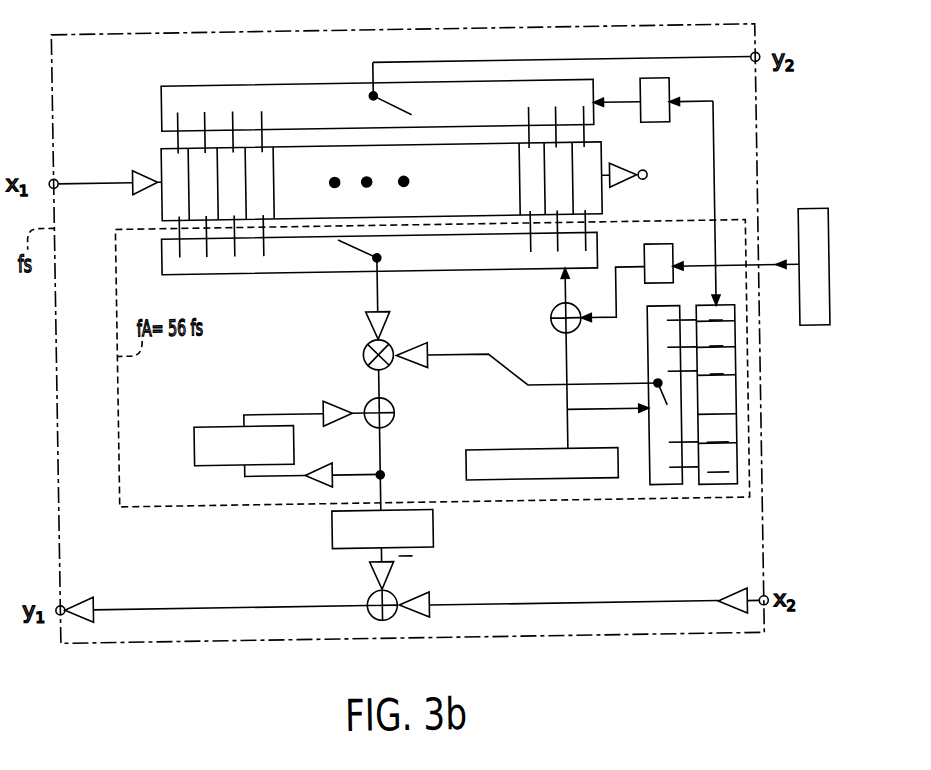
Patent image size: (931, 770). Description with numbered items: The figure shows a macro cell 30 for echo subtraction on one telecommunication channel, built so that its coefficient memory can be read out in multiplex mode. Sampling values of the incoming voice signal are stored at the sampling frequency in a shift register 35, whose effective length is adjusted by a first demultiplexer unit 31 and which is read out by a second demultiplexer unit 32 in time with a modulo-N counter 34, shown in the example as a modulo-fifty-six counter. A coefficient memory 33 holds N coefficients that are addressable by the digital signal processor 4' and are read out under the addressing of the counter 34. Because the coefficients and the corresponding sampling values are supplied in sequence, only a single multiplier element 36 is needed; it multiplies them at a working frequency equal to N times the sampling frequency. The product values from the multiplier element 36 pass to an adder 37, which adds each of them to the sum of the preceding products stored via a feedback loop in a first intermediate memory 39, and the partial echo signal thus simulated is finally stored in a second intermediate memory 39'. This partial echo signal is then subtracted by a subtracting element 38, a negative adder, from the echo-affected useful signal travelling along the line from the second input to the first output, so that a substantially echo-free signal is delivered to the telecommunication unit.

The macro cell 30 is at (56, 47).
The first demultiplexer unit 31 is at (165, 104).
The second demultiplexer unit 32 is at (163, 253).
The coefficient memory 33 is at (735, 401).
The modulo-N counter 34 is at (464, 465).
The shift register 35 is at (461, 190).
The multiplier element 36 is at (363, 356).
The adder 37 is at (364, 404).
The subtracting element 38 is at (365, 612).
The first intermediate memory 39 is at (226, 456).
The second intermediate memory 39' is at (363, 542).
The digital signal processor 4' is at (800, 243).